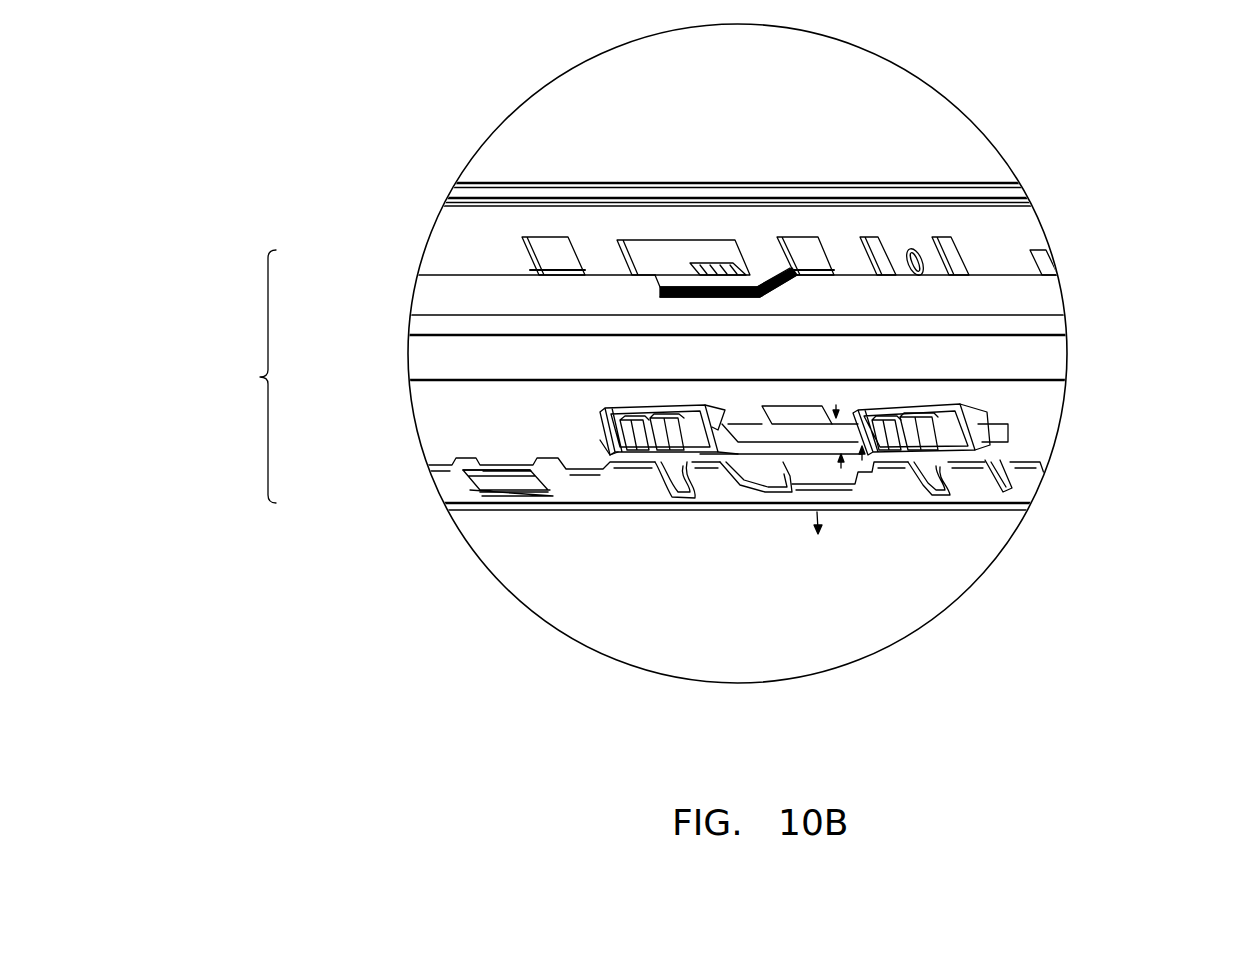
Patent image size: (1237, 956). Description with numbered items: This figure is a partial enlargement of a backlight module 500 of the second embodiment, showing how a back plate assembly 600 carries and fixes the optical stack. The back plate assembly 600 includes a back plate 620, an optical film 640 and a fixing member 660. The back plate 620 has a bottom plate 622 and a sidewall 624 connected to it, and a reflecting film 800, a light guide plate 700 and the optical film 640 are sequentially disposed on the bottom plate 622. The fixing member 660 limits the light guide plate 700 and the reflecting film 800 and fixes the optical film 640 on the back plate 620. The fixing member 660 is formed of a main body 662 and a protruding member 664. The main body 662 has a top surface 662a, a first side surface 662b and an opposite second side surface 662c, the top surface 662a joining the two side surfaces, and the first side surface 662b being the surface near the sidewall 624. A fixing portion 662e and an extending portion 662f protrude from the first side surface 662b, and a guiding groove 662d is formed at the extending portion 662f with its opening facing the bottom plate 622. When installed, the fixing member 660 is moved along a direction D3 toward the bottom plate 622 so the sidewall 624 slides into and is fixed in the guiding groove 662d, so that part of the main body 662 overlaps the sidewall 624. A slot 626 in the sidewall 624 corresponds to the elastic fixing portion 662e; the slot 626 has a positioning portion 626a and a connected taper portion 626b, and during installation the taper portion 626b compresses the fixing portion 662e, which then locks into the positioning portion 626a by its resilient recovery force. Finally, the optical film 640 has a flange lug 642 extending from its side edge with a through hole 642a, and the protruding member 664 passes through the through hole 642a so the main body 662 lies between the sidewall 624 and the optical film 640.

The backlight module 500 is at (366, 88).
The back plate assembly 600 is at (241, 376).
The back plate 620 is at (728, 458).
The bottom plate 622 is at (1042, 406).
The sidewall 624 is at (765, 500).
The slot 626 is at (932, 513).
The positioning portion 626a is at (760, 498).
The taper portion 626b is at (665, 500).
The optical film 640 is at (640, 253).
The flange lug 642 is at (757, 290).
The through hole 642a is at (717, 252).
The fixing member 660 is at (731, 432).
The main body 662 is at (618, 482).
The top surface 662a is at (838, 412).
The first side surface 662b is at (860, 513).
The second side surface 662c is at (993, 423).
The guiding groove 662d is at (843, 513).
The fixing portion 662e is at (635, 480).
The extending portion 662f is at (745, 405).
The protruding member 664 is at (800, 432).
The light guide plate 700 is at (1053, 323).
The reflecting film 800 is at (1060, 380).
The direction D3 is at (811, 539).